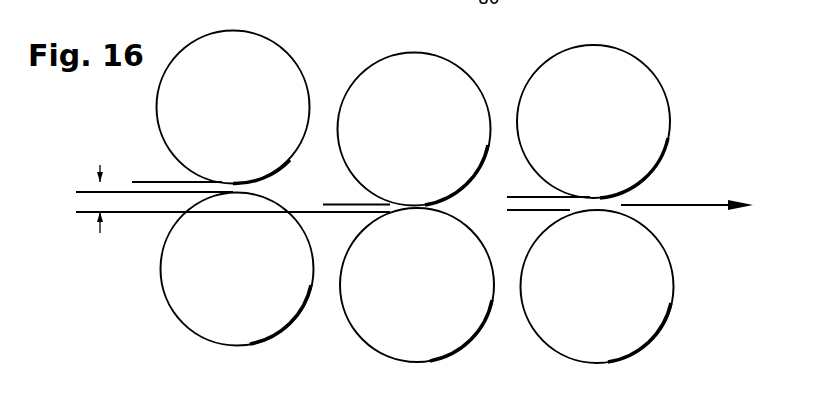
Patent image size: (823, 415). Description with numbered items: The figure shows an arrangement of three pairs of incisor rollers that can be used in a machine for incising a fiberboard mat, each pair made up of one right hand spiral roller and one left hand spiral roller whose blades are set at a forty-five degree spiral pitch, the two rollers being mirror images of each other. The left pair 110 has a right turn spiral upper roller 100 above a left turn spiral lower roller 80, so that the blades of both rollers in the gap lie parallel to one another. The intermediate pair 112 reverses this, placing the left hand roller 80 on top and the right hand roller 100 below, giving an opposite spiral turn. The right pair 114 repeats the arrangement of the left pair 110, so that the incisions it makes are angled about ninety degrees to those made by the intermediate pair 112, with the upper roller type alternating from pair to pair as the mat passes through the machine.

The right hand incisor roller 100 is at (254, 55).
The left hand incisor roller 80 is at (453, 85).
The left pair 110 is at (148, 140).
The intermediate pair 112 is at (342, 66).
The right pair 114 is at (555, 41).